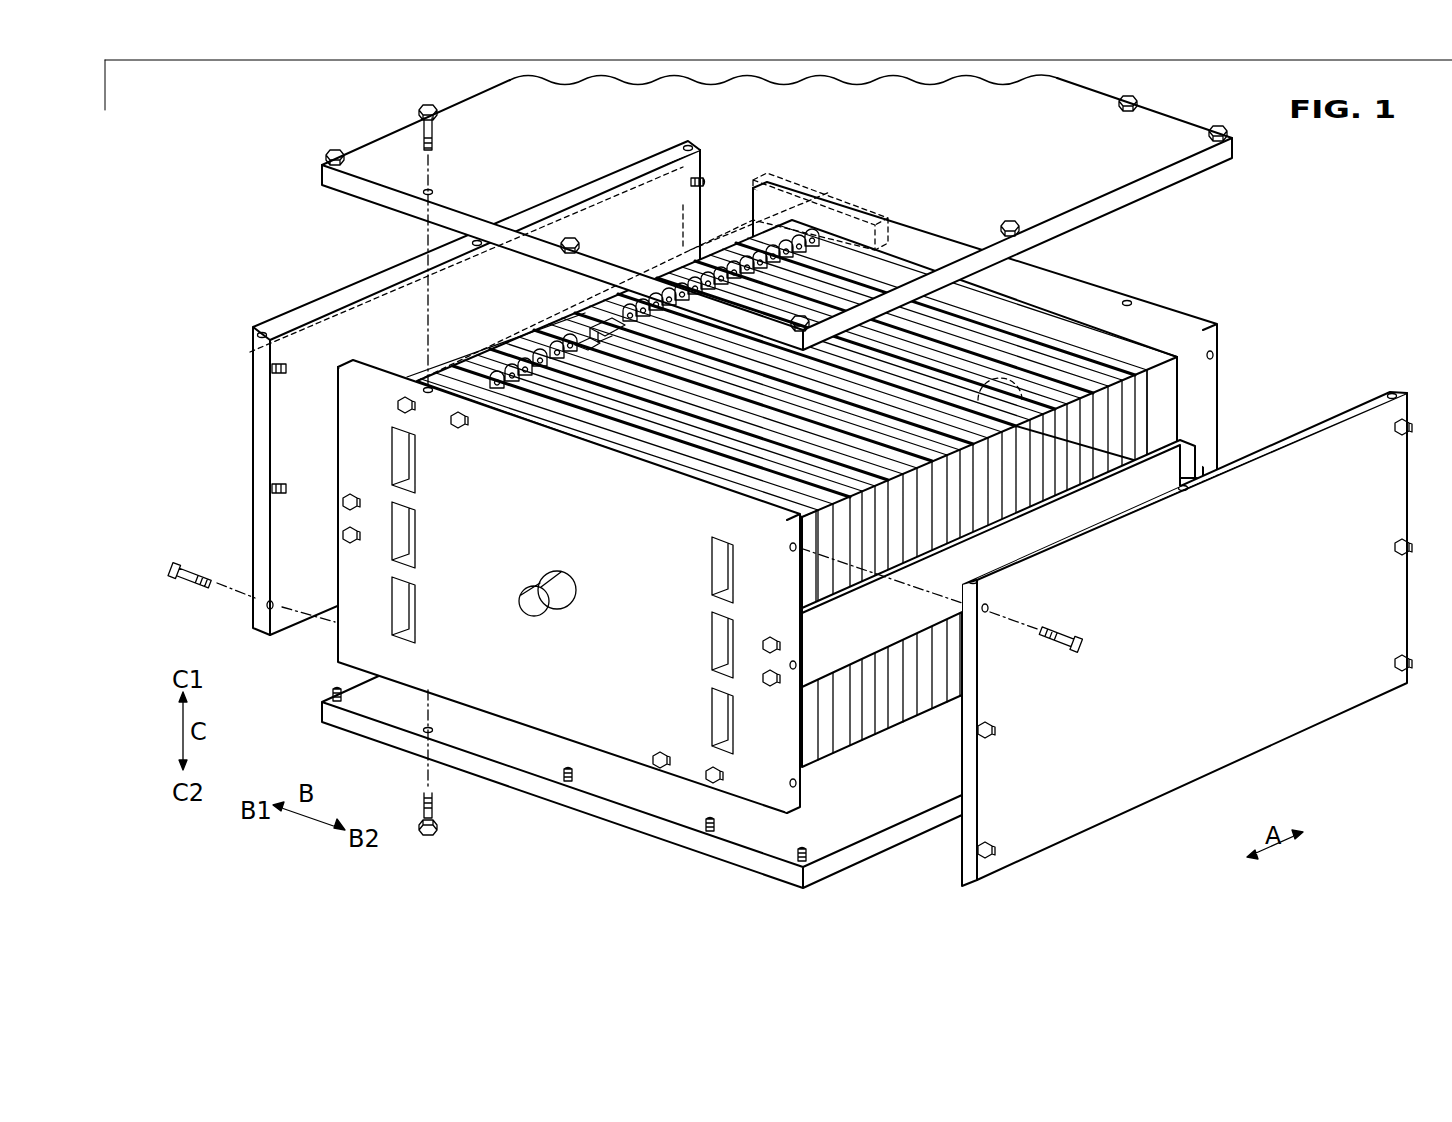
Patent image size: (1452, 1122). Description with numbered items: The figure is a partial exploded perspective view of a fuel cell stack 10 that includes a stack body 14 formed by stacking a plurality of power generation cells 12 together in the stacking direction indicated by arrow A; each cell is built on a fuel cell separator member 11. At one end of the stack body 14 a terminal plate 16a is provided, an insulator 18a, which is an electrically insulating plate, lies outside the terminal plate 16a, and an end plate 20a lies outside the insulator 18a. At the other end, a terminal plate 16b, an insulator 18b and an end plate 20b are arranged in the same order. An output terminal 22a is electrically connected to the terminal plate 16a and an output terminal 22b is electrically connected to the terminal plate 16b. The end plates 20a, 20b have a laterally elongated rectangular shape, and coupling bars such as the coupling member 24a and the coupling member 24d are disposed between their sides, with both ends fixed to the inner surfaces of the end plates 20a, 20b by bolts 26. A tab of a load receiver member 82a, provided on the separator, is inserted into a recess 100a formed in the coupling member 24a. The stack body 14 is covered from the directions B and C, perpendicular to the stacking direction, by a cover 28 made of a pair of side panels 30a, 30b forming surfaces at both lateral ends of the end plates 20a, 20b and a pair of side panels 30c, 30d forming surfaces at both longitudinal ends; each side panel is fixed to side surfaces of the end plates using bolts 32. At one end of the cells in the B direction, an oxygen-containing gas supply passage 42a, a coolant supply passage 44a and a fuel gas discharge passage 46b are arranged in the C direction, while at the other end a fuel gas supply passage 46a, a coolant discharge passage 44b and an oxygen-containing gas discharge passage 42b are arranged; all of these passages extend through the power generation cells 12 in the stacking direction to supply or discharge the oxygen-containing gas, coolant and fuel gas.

The fuel cell stack 10 is at (1388, 167).
The fuel cell separator member 11 is at (573, 332).
The power generation cells 12 is at (1113, 479).
The stack body 14 is at (846, 525).
The terminal plate 16a is at (827, 748).
The terminal plate 16b is at (1155, 392).
The insulator 18a is at (807, 753).
The insulator 18b is at (1158, 355).
The end plate 20a is at (569, 629).
The end plate 20b is at (1158, 310).
The output terminal 22a is at (532, 612).
The output terminal 22b is at (1022, 402).
The coupling member 24a is at (792, 220).
The coupling member 24d is at (1140, 488).
The bolts 26 is at (397, 408).
The cover 28 is at (366, 124).
The side panel 30a is at (340, 182).
The side panel 30b is at (516, 780).
The side panel 30c is at (258, 408).
The side panel 30d is at (1085, 826).
The bolts 32 is at (426, 108).
The oxygen-containing gas supply passage 42a is at (412, 467).
The oxygen-containing gas discharge passage 42b is at (715, 725).
The coolant supply passage 44a is at (412, 542).
The coolant discharge passage 44b is at (715, 651).
The fuel gas supply passage 46a is at (715, 576).
The fuel gas discharge passage 46b is at (412, 607).
The load receiver member 82a is at (683, 245).
The recess 100a is at (607, 325).